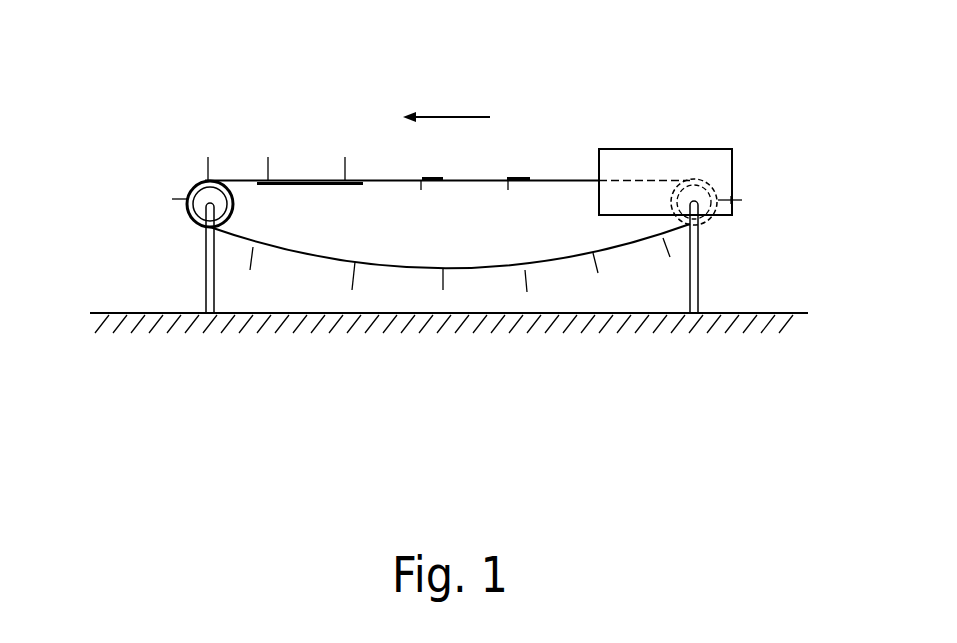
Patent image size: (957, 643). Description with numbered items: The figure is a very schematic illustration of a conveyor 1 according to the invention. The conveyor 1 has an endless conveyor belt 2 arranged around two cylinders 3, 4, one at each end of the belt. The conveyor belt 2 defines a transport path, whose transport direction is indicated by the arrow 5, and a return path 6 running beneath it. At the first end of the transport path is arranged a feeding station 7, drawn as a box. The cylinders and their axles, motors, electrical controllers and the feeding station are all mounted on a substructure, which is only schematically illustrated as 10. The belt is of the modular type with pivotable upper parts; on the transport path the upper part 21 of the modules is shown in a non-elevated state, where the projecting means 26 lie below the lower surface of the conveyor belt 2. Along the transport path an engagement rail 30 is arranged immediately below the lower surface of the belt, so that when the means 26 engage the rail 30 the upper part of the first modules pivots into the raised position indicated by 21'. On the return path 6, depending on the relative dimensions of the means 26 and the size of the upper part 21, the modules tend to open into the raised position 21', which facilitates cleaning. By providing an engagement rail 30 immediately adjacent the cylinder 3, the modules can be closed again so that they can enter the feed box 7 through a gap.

The conveyor 1 is at (623, 137).
The endless conveyor belt 2 is at (669, 170).
The cylinder 3 is at (702, 193).
The cylinder 4 is at (205, 182).
The arrow 5 is at (440, 115).
The return path 6 is at (419, 285).
The feeding station 7 is at (733, 162).
The substructure 10 is at (714, 265).
The upper part 21 is at (402, 115).
The raised position of upper part 21' is at (433, 223).
The projecting means 26 is at (432, 202).
The engagement rail 30 is at (297, 207).